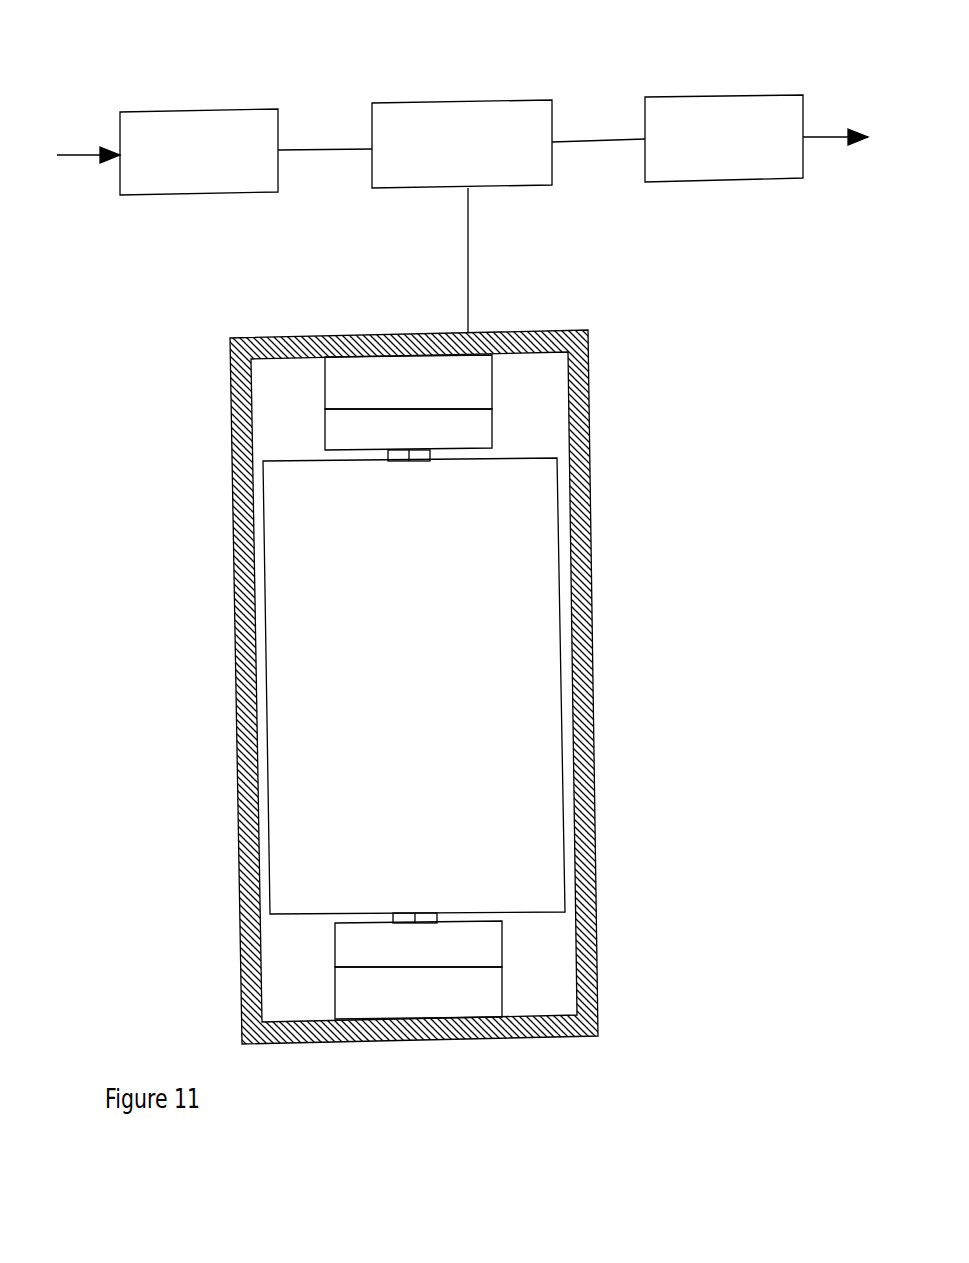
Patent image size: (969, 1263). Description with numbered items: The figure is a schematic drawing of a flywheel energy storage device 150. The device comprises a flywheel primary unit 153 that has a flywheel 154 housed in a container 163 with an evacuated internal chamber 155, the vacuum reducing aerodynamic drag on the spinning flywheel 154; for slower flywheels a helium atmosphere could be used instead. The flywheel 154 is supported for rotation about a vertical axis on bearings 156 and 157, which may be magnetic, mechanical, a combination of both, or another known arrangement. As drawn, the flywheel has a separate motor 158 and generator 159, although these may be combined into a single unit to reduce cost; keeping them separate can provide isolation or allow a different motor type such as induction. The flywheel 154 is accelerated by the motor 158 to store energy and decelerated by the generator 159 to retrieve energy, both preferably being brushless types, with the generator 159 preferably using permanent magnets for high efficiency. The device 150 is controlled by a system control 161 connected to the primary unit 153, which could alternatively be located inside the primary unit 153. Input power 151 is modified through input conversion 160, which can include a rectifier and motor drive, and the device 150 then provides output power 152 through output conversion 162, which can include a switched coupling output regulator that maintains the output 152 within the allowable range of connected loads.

The flywheel energy storage device 150 is at (241, 37).
The input power 151 is at (78, 155).
The output power 152 is at (822, 137).
The flywheel primary unit 153 is at (599, 382).
The flywheel 154 is at (550, 910).
The evacuated internal chamber 155 is at (552, 976).
The bearing 156 is at (494, 378).
The bearing 157 is at (336, 1000).
The motor 158 is at (494, 430).
The generator 159 is at (334, 950).
The input conversion 160 is at (238, 198).
The system control 161 is at (459, 100).
The output conversion 162 is at (734, 183).
The container 163 is at (594, 603).